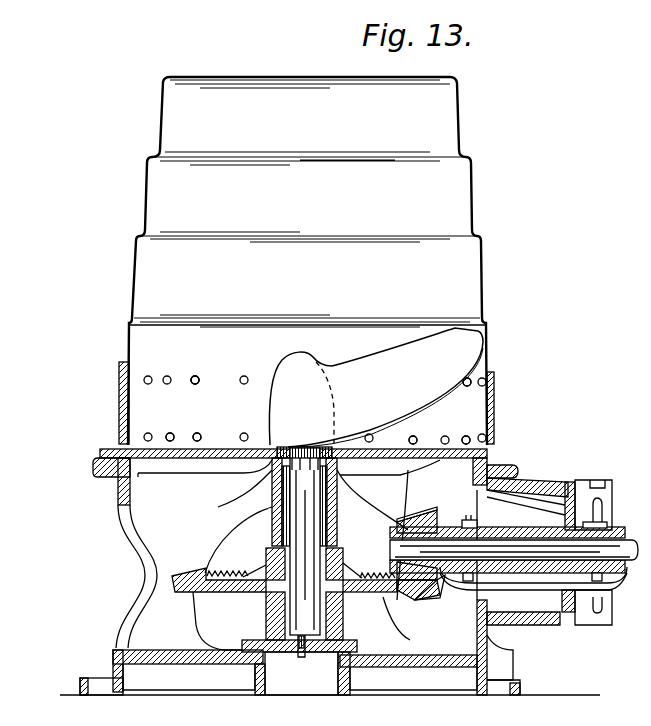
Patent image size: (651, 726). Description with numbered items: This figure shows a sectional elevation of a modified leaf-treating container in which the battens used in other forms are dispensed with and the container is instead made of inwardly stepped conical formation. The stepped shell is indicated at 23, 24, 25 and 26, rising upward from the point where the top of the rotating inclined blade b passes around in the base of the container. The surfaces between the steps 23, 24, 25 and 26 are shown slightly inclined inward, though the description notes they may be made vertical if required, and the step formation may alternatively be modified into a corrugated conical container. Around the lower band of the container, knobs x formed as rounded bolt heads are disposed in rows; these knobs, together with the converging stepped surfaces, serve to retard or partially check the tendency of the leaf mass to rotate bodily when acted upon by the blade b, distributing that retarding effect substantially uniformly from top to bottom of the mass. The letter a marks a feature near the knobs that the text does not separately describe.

The step 26 is at (326, 112).
The step 25 is at (322, 187).
The step 24 is at (319, 270).
The step 23 is at (315, 374).
The holes in casing a is at (202, 379).
The knobs x is at (192, 384).
The blade b is at (376, 387).